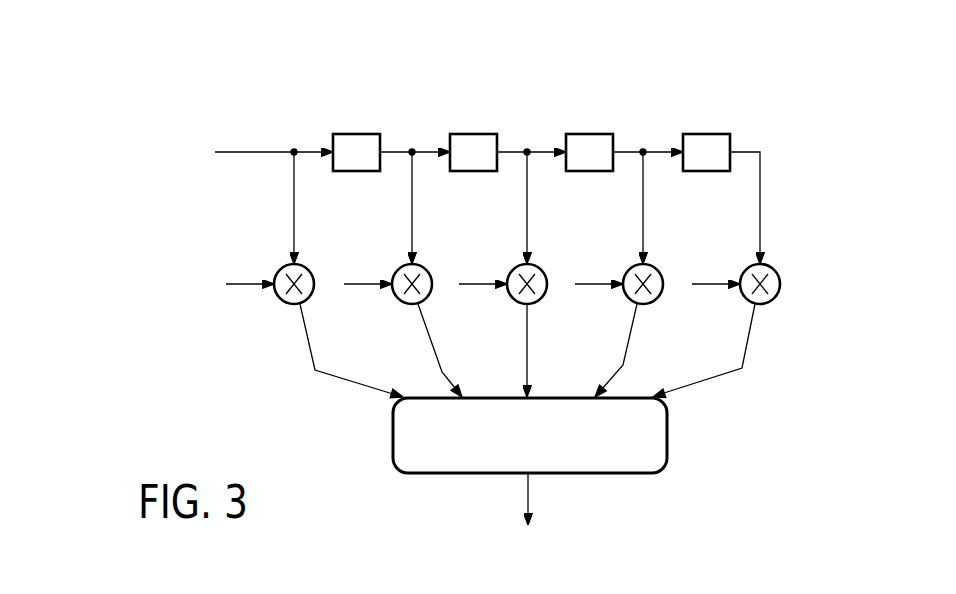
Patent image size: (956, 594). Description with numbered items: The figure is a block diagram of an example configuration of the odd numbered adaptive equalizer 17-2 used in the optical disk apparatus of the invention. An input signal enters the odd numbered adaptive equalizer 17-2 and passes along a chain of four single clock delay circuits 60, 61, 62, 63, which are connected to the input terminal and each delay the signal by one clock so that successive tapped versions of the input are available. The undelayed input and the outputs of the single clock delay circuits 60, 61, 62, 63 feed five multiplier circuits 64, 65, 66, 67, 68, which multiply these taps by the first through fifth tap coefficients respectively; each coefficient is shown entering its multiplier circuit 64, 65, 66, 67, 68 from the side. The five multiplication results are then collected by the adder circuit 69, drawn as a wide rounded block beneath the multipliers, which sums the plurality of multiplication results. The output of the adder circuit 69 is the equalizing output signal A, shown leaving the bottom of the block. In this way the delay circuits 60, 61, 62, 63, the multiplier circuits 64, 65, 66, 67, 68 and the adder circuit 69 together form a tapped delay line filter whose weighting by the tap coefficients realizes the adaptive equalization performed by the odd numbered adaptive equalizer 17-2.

The odd numbered adaptive equalizer 17-2 is at (560, 67).
The single clock delay circuit 60 is at (357, 133).
The single clock delay circuit 61 is at (474, 133).
The single clock delay circuit 62 is at (590, 133).
The single clock delay circuit 63 is at (707, 133).
The multiplier circuit 64 is at (308, 270).
The multiplier circuit 65 is at (426, 270).
The multiplier circuit 66 is at (541, 270).
The multiplier circuit 67 is at (657, 270).
The multiplier circuit 68 is at (772, 270).
The adder circuit 69 is at (667, 433).